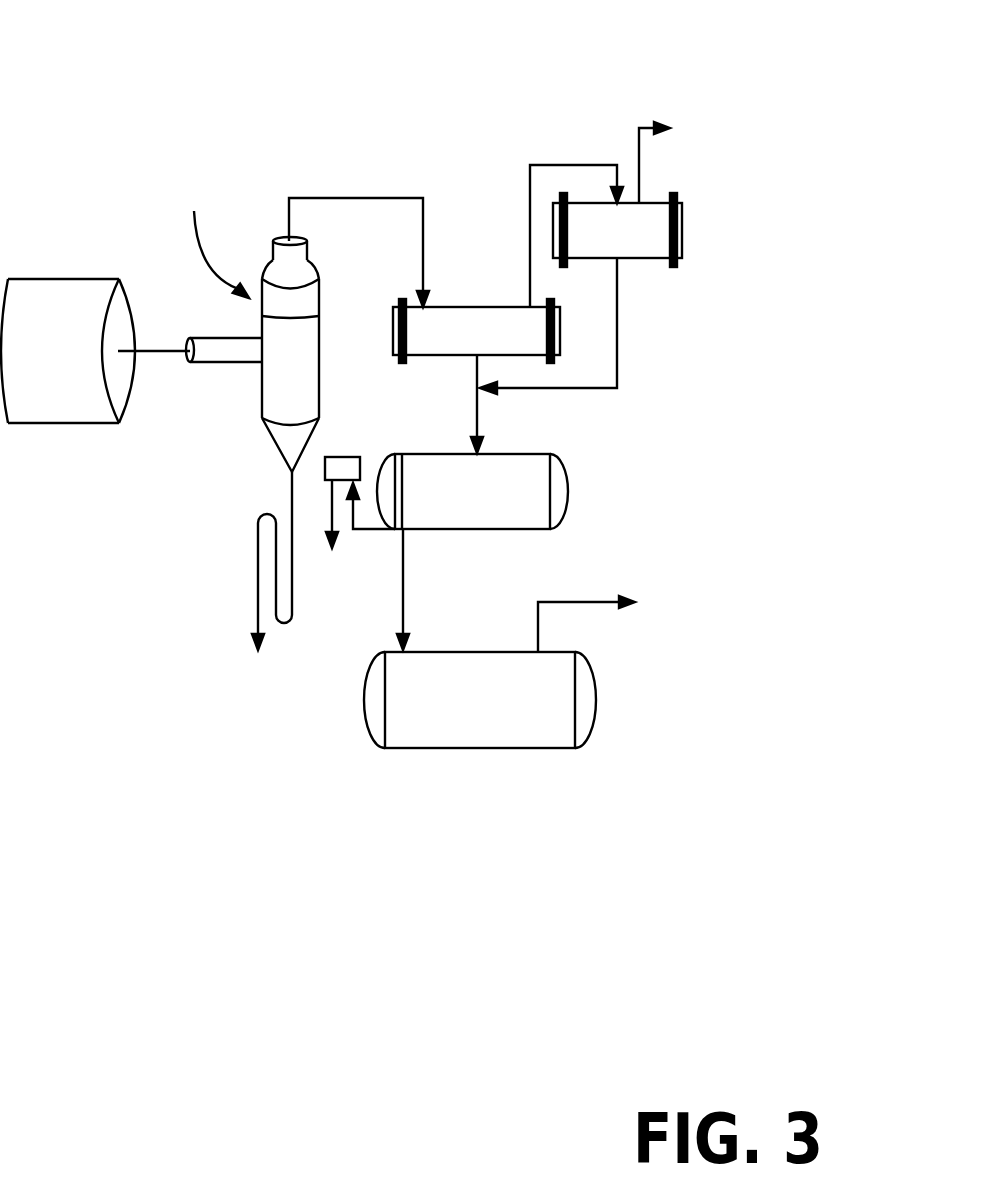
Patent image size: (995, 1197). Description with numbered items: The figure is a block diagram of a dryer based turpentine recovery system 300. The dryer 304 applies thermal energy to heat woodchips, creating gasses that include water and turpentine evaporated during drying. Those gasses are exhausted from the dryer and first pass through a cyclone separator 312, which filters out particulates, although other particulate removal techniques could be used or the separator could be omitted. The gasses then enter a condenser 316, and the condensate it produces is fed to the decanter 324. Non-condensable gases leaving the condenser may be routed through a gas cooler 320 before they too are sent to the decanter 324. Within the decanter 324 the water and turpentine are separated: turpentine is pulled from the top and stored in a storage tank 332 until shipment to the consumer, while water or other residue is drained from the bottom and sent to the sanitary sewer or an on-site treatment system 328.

The turpentine recovery system 300 is at (101, 29).
The dryer 304 is at (20, 279).
The cyclone separator 312 is at (320, 308).
The condenser 316 is at (465, 302).
The gas cooler 320 is at (643, 260).
The decanter 324 is at (569, 492).
The on-site treatment system 328 is at (341, 456).
The storage tank 332 is at (598, 700).